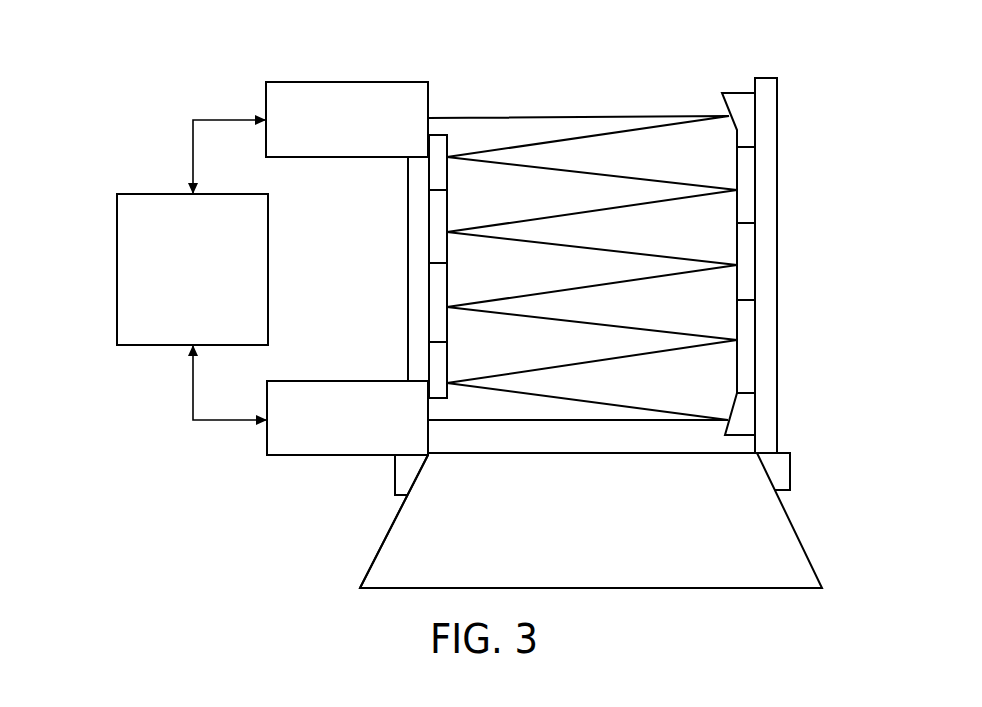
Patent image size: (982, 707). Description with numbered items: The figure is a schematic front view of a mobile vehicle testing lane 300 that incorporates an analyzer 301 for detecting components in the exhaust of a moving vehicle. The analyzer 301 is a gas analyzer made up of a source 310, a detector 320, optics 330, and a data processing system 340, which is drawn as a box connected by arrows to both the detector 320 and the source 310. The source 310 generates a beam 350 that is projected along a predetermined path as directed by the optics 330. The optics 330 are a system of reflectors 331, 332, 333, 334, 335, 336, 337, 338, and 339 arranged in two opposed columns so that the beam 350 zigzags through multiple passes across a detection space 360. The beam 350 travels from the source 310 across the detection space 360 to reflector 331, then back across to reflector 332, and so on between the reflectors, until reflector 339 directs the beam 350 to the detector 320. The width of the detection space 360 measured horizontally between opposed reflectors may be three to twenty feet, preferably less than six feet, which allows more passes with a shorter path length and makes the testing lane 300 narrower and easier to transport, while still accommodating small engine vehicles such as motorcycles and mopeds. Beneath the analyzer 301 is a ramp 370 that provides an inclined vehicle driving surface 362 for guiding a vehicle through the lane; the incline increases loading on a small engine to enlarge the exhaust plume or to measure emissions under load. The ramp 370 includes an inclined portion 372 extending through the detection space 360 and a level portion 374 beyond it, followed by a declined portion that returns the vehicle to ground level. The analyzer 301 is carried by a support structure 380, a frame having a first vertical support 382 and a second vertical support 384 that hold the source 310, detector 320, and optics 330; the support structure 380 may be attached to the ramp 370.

The mobile vehicle testing lane 300 is at (855, 85).
The analyzer 301 is at (183, 72).
The source 310 is at (297, 456).
The detector 320 is at (353, 82).
The optics 330 is at (599, 239).
The reflector 331 is at (768, 368).
The reflector 332 is at (433, 362).
The reflector 333 is at (746, 340).
The reflector 334 is at (433, 313).
The reflector 335 is at (746, 238).
The reflector 336 is at (433, 238).
The reflector 337 is at (746, 165).
The reflector 338 is at (433, 165).
The reflector 339 is at (738, 112).
The data processing system 340 is at (117, 275).
The beam 350 is at (612, 422).
The detection space 360 is at (710, 220).
The vehicle driving surface 362 is at (680, 452).
The ramp 370 is at (770, 523).
The inclined portion 372 is at (378, 552).
The level portion 374 is at (493, 452).
The support structure 380 is at (778, 467).
The first vertical support 382 is at (757, 292).
The second vertical support 384 is at (417, 268).